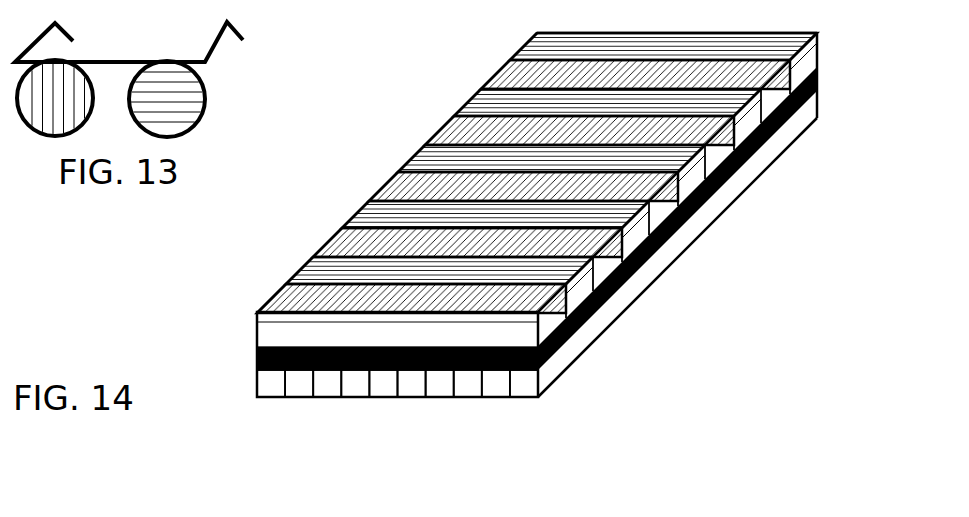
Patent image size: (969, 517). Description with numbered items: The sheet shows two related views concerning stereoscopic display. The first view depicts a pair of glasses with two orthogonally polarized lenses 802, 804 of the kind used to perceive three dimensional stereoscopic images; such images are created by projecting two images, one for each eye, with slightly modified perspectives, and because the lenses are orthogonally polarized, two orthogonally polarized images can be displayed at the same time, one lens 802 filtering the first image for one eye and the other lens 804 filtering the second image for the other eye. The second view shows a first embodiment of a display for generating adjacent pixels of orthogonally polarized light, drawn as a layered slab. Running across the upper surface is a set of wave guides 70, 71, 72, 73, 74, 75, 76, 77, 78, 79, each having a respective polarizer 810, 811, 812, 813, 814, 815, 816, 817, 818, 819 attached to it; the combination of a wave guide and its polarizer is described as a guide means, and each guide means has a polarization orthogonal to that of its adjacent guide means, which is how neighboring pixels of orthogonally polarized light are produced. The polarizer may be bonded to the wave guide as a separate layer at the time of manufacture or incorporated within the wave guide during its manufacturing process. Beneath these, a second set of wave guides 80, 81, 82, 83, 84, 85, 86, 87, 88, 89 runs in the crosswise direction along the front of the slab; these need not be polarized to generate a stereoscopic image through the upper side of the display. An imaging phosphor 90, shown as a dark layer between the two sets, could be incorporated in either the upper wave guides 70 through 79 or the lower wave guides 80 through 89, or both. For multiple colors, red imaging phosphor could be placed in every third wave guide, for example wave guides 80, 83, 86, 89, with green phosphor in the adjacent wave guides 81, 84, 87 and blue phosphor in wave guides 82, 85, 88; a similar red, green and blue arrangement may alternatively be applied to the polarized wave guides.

In FIG. 13, the orthogonally polarized lens 802 is at (67, 77).
In FIG. 13, the orthogonally polarized lens 804 is at (167, 81).
In FIG. 14, the wave guide 70 is at (580, 340).
In FIG. 14, the wave guide 71 is at (608, 315).
In FIG. 14, the wave guide 72 is at (637, 283).
In FIG. 14, the wave guide 73 is at (671, 243).
In FIG. 14, the wave guide 74 is at (693, 222).
In FIG. 14, the wave guide 75 is at (720, 200).
In FIG. 14, the wave guide 76 is at (752, 172).
In FIG. 14, the wave guide 77 is at (778, 132).
In FIG. 14, the wave guide 78 is at (812, 108).
In FIG. 14, the wave guide 79 is at (822, 82).
In FIG. 14, the wave guide 80 is at (274, 378).
In FIG. 14, the wave guide 81 is at (297, 390).
In FIG. 14, the wave guide 82 is at (307, 398).
In FIG. 14, the wave guide 83 is at (337, 397).
In FIG. 14, the wave guide 84 is at (383, 390).
In FIG. 14, the wave guide 85 is at (413, 389).
In FIG. 14, the wave guide 86 is at (443, 392).
In FIG. 14, the wave guide 87 is at (470, 390).
In FIG. 14, the wave guide 88 is at (498, 390).
In FIG. 14, the wave guide 89 is at (528, 398).
In FIG. 14, the imaging phosphor 90 is at (257, 358).
In FIG. 14, the polarizer 810 is at (273, 298).
In FIG. 14, the polarizer 811 is at (304, 268).
In FIG. 14, the polarizer 812 is at (338, 243).
In FIG. 14, the polarizer 813 is at (366, 210).
In FIG. 14, the polarizer 814 is at (391, 177).
In FIG. 14, the polarizer 815 is at (427, 145).
In FIG. 14, the polarizer 816 is at (457, 117).
In FIG. 14, the polarizer 817 is at (486, 93).
In FIG. 14, the polarizer 818 is at (506, 64).
In FIG. 14, the polarizer 819 is at (534, 37).